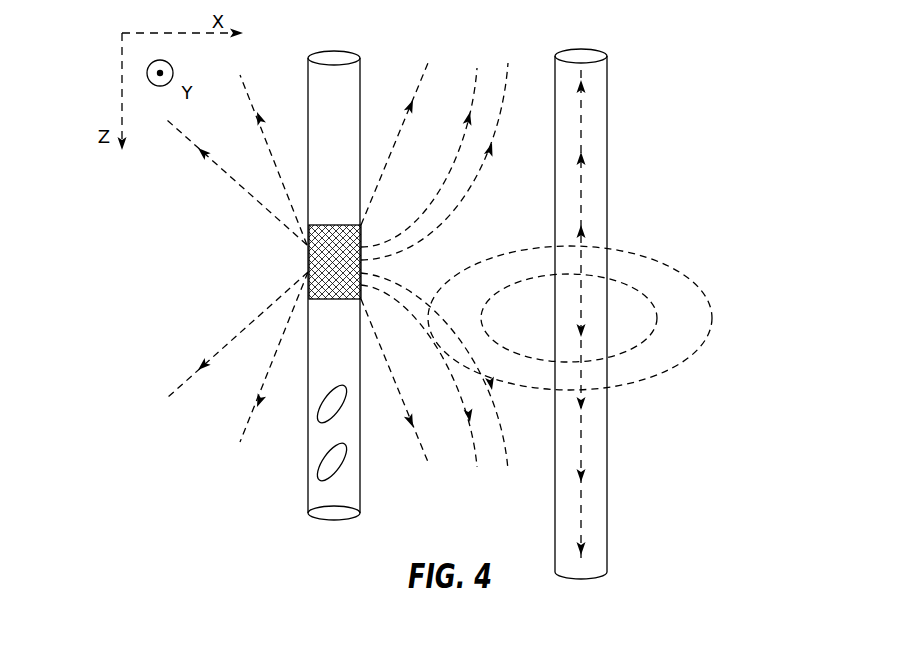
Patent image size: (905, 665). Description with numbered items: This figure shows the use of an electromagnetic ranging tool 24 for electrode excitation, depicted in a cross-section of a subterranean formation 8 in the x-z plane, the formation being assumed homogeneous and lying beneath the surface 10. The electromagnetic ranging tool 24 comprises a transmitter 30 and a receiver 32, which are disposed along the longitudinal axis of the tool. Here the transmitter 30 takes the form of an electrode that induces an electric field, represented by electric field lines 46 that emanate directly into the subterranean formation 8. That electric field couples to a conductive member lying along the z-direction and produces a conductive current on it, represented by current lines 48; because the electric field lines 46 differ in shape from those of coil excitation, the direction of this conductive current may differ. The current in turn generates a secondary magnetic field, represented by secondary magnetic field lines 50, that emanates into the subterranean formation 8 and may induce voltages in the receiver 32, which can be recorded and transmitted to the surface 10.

The subterranean formation 8 is at (266, 506).
The surface 10 is at (607, 305).
The electromagnetic ranging tool 24 is at (308, 125).
The transmitter 30 is at (318, 263).
The receiver 32 is at (343, 393).
The electric field lines 46 is at (405, 120).
The current lines 48 is at (583, 170).
The secondary magnetic field lines 50 is at (692, 353).